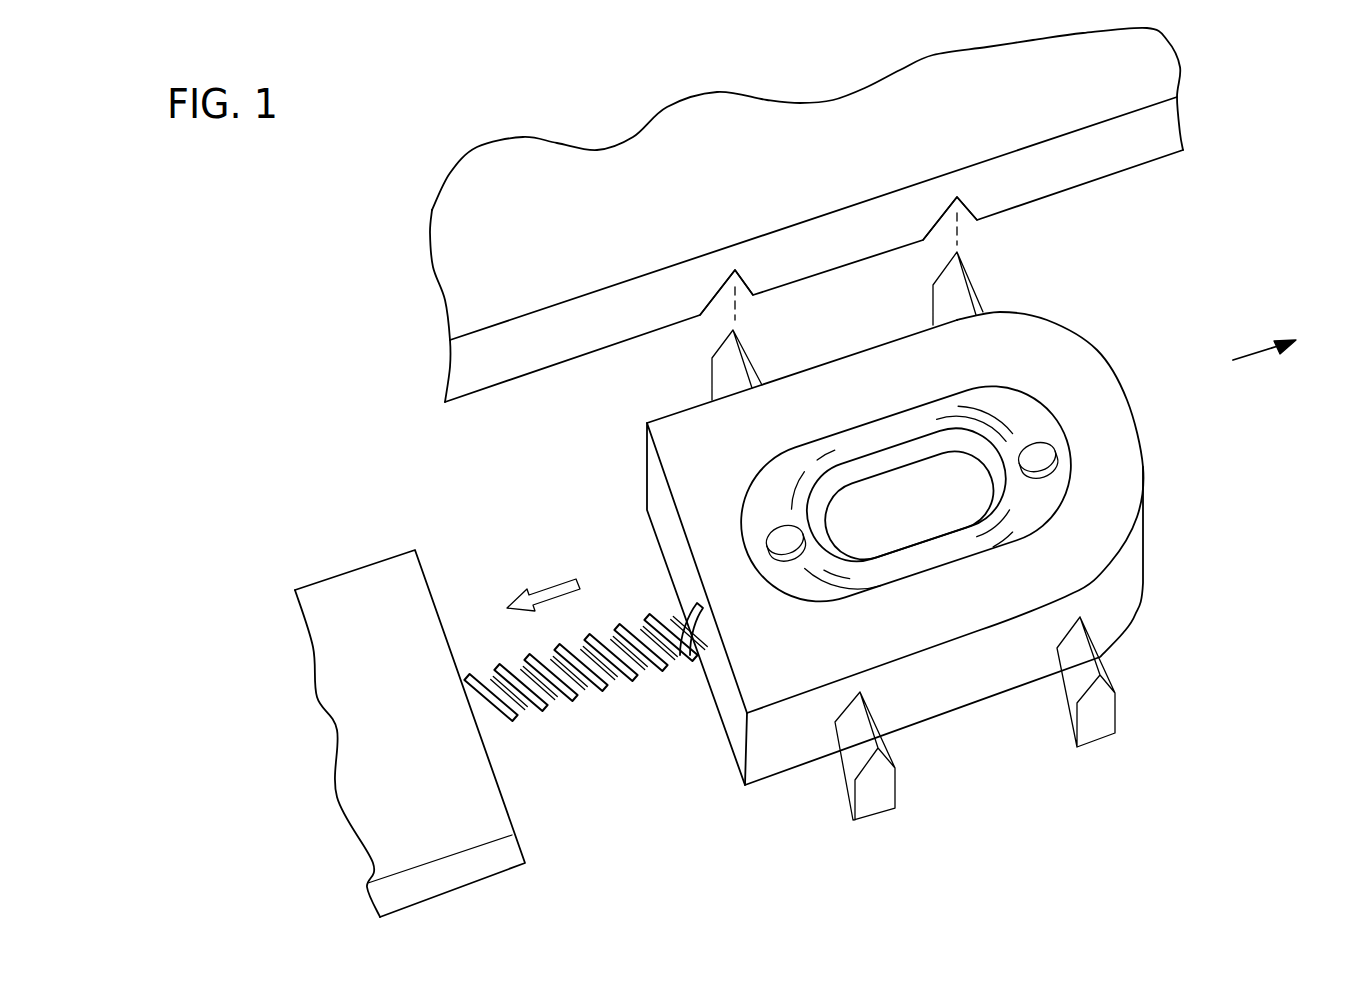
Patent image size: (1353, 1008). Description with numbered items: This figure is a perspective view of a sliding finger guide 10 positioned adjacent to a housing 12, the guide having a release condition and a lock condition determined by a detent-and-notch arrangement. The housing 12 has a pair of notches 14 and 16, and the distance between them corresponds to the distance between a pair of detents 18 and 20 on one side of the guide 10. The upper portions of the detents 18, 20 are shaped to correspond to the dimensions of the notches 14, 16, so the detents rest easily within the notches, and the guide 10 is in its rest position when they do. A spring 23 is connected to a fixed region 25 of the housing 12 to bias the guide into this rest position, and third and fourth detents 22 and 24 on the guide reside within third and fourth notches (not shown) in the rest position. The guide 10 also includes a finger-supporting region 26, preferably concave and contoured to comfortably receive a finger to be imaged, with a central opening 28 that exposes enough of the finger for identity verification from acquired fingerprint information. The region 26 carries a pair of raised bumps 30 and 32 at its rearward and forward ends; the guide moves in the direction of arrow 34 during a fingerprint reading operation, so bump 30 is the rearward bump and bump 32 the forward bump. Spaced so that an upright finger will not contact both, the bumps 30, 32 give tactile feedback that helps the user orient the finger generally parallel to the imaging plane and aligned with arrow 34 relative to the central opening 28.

The sliding finger guide 10 is at (620, 757).
The housing 12 is at (435, 270).
The notch 14 is at (747, 280).
The notch 16 is at (967, 202).
The detent 18 is at (748, 345).
The detent 20 is at (972, 268).
The third detent 22 is at (878, 815).
The spring 23 is at (635, 680).
The fourth detent 24 is at (1103, 740).
The fixed region 25 is at (357, 575).
The finger-supporting region 26 is at (833, 440).
The central opening 28 is at (912, 530).
The raised bump 30 is at (768, 540).
The raised bump 32 is at (1056, 455).
The arrow 34 is at (1252, 353).